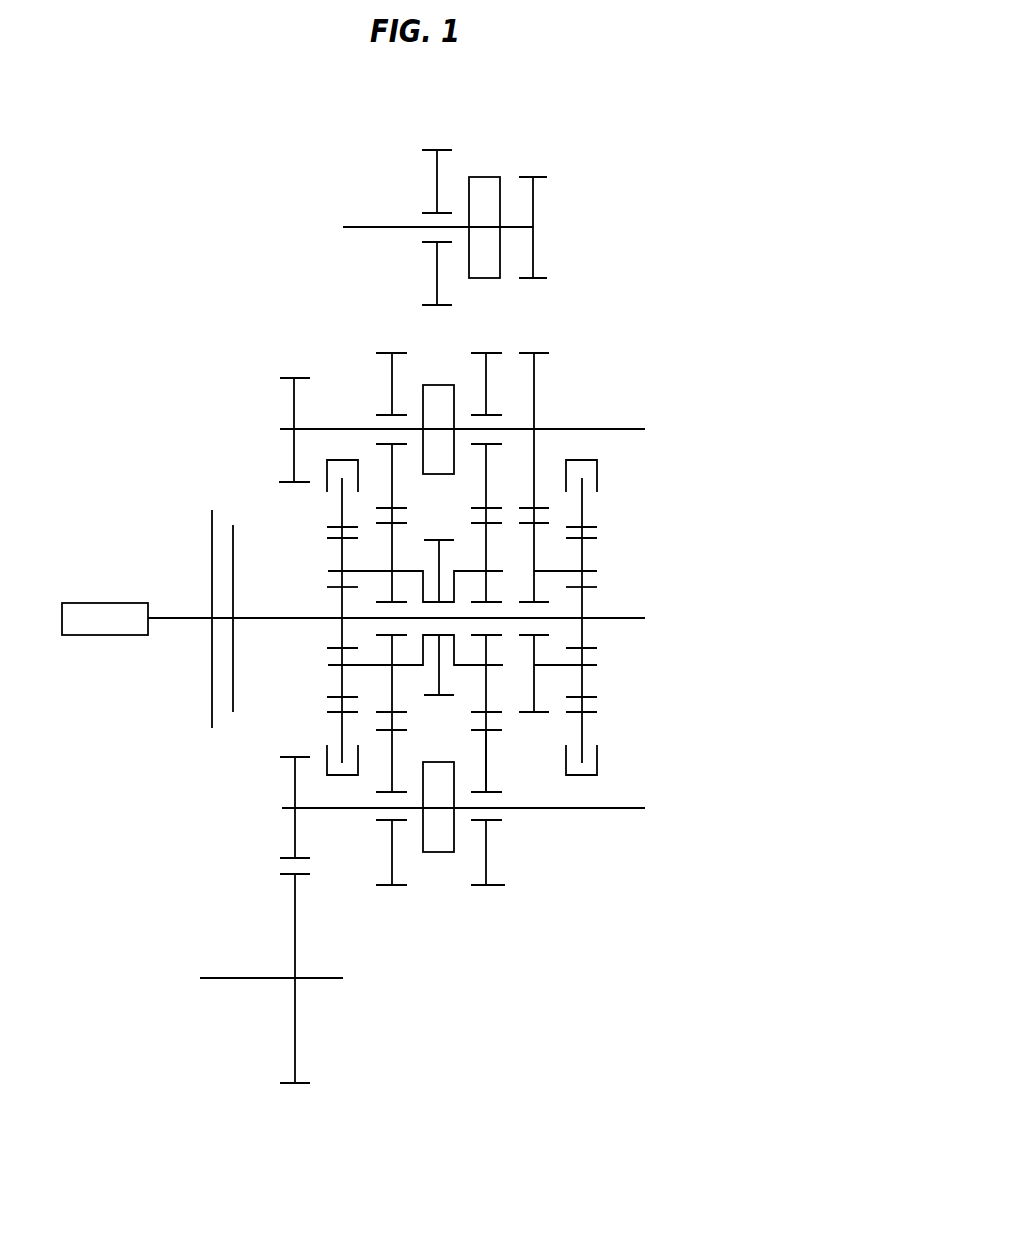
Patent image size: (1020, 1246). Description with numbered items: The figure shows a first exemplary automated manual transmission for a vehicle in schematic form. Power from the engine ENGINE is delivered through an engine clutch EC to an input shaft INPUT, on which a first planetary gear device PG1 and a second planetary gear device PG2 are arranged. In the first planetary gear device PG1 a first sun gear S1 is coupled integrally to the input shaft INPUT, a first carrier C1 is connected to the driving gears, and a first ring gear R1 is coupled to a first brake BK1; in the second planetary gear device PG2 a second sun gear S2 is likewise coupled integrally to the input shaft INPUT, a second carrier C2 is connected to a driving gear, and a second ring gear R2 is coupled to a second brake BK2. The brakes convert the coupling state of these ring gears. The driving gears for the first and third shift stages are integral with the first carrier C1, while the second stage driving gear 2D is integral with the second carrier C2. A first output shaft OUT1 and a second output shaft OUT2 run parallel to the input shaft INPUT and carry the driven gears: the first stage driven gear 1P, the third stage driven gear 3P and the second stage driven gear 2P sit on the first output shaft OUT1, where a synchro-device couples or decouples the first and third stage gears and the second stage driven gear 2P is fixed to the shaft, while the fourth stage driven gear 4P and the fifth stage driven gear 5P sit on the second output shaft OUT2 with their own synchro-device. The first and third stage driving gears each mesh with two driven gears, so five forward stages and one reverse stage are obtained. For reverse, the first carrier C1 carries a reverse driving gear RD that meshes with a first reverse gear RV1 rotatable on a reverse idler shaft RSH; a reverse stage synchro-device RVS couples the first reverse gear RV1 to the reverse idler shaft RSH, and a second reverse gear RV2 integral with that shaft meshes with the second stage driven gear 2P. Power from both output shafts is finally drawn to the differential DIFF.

The engine ENGINE is at (105, 619).
The input shaft INPUT is at (625, 620).
The engine clutch EC is at (204, 690).
The first reverse gear RV1 is at (433, 150).
The reverse stage synchro-device RVS is at (487, 177).
The second reverse gear RV2 is at (540, 176).
The reverse idler shaft RSH is at (367, 227).
The first stage driven gear 1P is at (388, 352).
The third stage driven gear 3P is at (493, 348).
The second stage driven gear 2P is at (543, 348).
The first output shaft OUT1 is at (622, 428).
The first planetary gear device PG1 is at (320, 529).
The first ring gear R1 is at (332, 522).
The first sun gear S1 is at (338, 590).
The first carrier C1 is at (328, 571).
The second carrier C2 is at (597, 571).
The second planetary gear device PG2 is at (612, 534).
The second ring gear R2 is at (592, 524).
The second sun gear S2 is at (597, 588).
The second stage driving gear 2D is at (549, 713).
The first brake BK1 is at (336, 777).
The second brake BK2 is at (578, 777).
The second output shaft OUT2 is at (620, 808).
The fourth stage driven gear 4P is at (393, 887).
The fifth stage driven gear 5P is at (492, 887).
The reverse driving gear RD is at (443, 695).
The differential DIFF is at (276, 994).